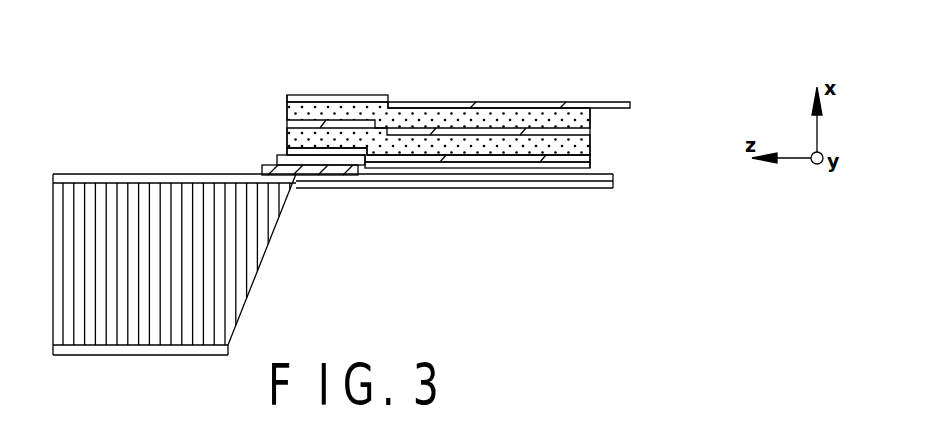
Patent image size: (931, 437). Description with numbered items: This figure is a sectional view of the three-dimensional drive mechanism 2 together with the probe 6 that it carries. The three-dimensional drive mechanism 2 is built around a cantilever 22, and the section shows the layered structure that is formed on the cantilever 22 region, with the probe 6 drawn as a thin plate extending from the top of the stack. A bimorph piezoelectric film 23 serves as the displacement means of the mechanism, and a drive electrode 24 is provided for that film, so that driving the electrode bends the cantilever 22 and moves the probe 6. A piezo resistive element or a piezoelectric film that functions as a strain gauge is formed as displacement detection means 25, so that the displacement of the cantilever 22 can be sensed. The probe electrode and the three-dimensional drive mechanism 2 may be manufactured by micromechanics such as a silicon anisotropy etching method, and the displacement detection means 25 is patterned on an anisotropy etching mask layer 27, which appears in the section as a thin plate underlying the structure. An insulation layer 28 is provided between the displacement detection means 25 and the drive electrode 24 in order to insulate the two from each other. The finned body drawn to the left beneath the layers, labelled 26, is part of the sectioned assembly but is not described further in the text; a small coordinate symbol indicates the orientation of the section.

The three-dimensional drive mechanism 2 is at (508, 70).
The probe 6 is at (617, 102).
The cantilever 22 is at (587, 222).
The bimorph piezoelectric film 23 is at (376, 152).
The drive electrode 24 is at (585, 146).
The displacement detection means 25 is at (266, 173).
The finned block 26 is at (240, 287).
The anisotropy etching mask layer 27 is at (613, 185).
The insulation layer 28 is at (610, 177).